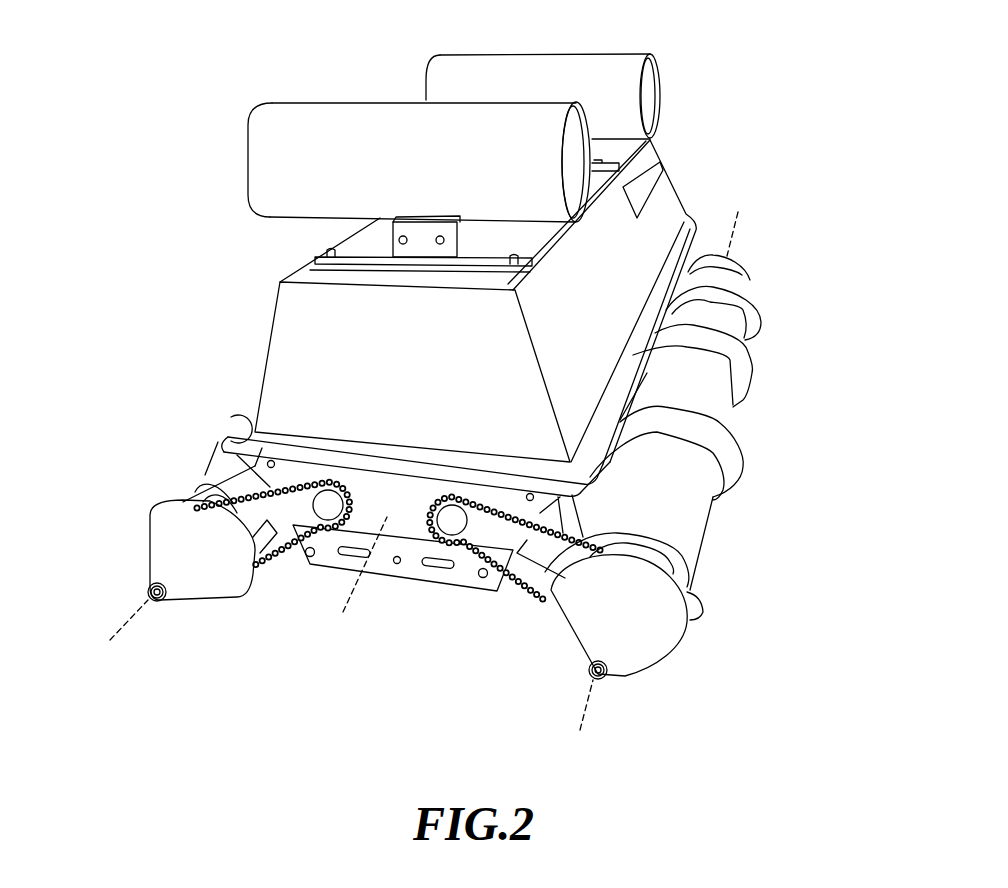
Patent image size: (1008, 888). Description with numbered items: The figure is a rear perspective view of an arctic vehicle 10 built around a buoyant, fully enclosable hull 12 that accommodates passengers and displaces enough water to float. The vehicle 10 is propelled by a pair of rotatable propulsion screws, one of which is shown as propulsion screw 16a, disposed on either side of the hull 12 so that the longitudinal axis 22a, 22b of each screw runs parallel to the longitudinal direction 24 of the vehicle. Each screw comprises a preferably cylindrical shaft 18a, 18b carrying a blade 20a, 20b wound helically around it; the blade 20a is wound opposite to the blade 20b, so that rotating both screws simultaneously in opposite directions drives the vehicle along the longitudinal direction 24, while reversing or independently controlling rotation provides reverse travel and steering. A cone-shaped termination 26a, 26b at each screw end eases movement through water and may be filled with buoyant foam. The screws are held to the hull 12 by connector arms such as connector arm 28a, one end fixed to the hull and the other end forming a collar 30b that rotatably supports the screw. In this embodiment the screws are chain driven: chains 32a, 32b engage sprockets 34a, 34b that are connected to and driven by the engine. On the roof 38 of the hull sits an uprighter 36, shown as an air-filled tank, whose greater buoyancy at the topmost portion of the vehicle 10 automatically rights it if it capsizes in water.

The vehicle 10 is at (199, 218).
The hull 12 is at (277, 340).
The propulsion screw 16a is at (189, 476).
The shaft 18a is at (210, 473).
The shaft 18b is at (700, 537).
The blade 20a is at (226, 421).
The blade 20b is at (733, 447).
The longitudinal axis 22a is at (125, 625).
The longitudinal axis 22b is at (585, 708).
The longitudinal direction 24 is at (343, 612).
The cone-shaped termination 26a is at (152, 553).
The cone-shaped termination 26b is at (660, 657).
The connector arm 28a is at (267, 517).
The collar 30b is at (675, 575).
The chain 32a is at (228, 512).
The chain 32b is at (533, 600).
The sprocket 34a is at (328, 517).
The sprocket 34b is at (452, 535).
The uprighter 36 is at (347, 106).
The roof 38 is at (309, 267).